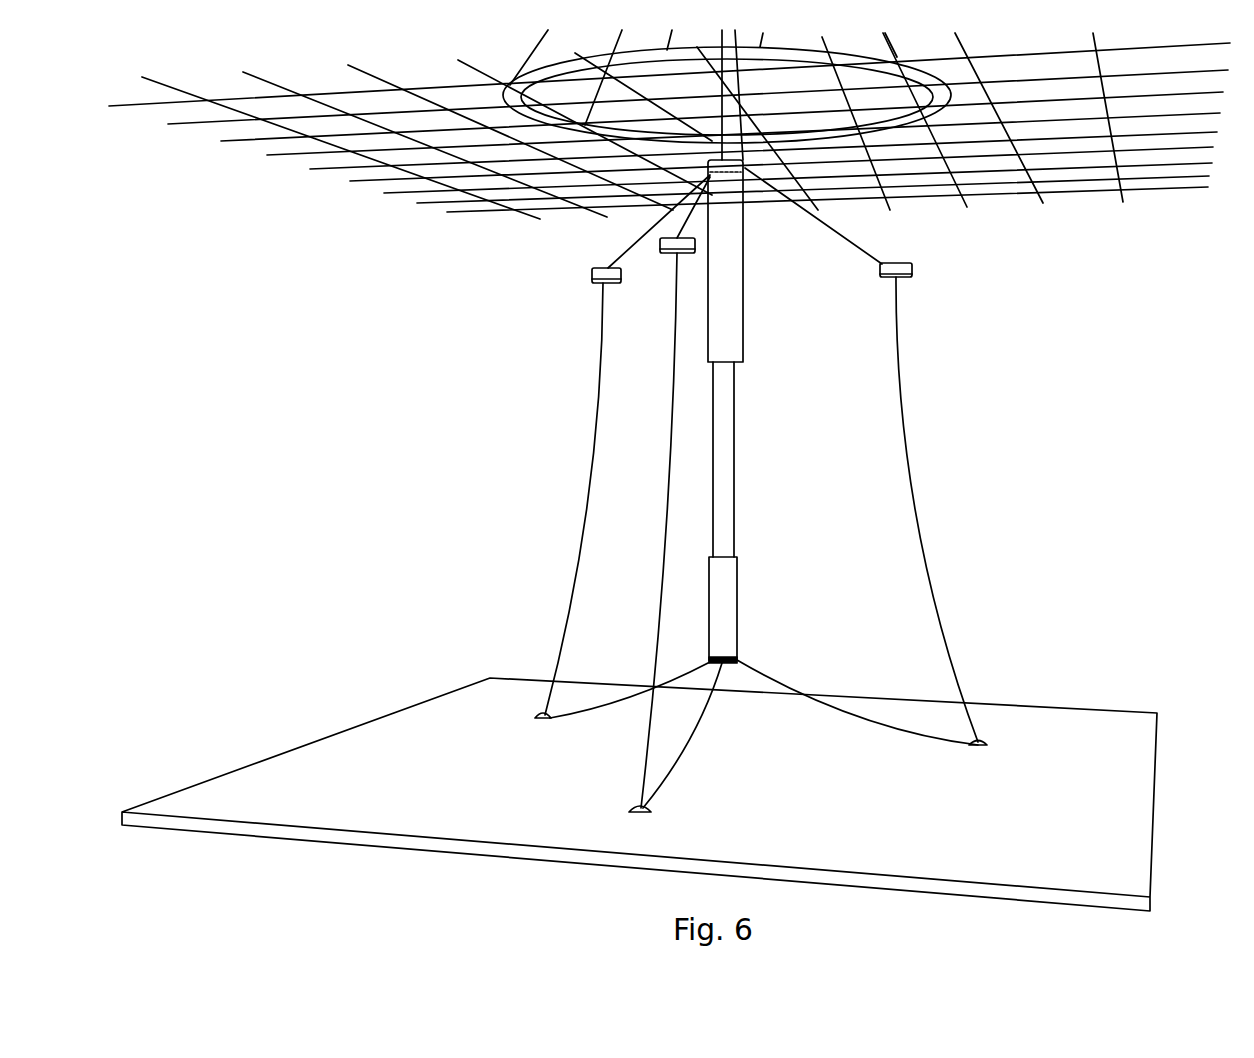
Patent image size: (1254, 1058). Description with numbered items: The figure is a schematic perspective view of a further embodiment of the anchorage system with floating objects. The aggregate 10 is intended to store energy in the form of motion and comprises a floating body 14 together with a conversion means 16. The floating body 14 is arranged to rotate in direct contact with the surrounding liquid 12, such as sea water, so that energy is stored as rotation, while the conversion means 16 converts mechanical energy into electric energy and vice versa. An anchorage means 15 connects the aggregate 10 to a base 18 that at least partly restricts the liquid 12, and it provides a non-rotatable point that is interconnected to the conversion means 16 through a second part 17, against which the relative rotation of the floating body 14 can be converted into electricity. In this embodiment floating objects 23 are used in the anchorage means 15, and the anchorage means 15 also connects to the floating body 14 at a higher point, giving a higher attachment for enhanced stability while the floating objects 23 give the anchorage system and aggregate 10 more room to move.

The aggregate 10 is at (639, 470).
The surrounding liquid 12 is at (137, 85).
The floating body 14 is at (723, 345).
The anchorage means 15 is at (918, 523).
The conversion means 16 is at (718, 652).
The second part 17 is at (737, 661).
The base 18 is at (761, 736).
The floating objects 23 is at (592, 280).